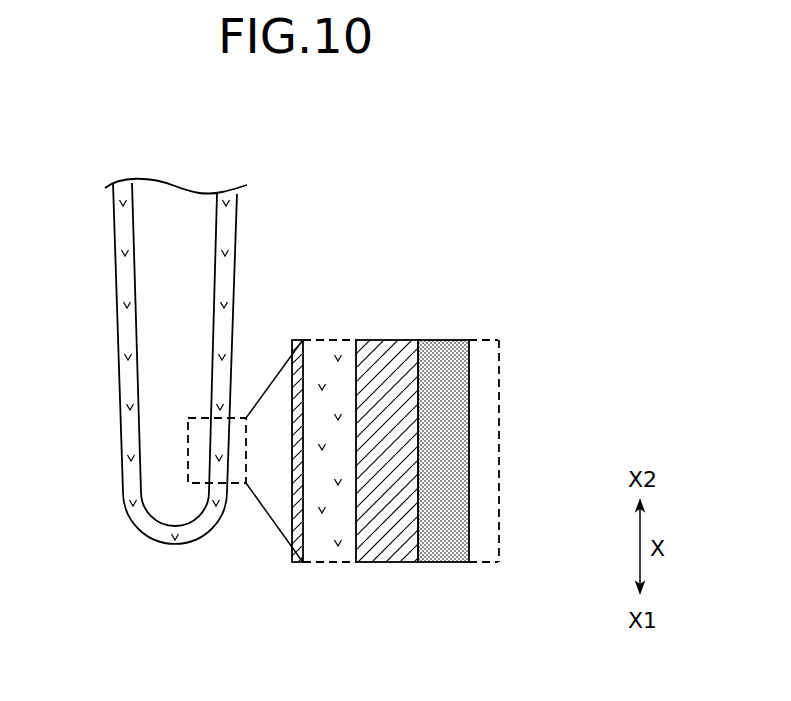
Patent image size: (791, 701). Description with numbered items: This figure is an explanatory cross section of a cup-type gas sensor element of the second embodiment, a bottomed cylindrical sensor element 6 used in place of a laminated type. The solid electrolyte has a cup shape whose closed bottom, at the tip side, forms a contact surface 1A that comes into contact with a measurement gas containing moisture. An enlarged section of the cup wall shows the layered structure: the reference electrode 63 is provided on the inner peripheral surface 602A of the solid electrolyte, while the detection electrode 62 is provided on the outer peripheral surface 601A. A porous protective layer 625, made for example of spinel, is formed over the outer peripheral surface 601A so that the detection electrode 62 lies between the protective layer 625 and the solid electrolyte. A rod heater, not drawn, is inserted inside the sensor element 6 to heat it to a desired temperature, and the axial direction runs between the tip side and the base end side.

The sensor element 6 is at (229, 339).
The inner peripheral surface 602A is at (133, 249).
The outer peripheral surface 601A is at (237, 222).
The contact surface 1A is at (134, 527).
The reference electrode 63 is at (292, 397).
The detection electrode 62 is at (392, 526).
The protective layer 625 is at (444, 367).